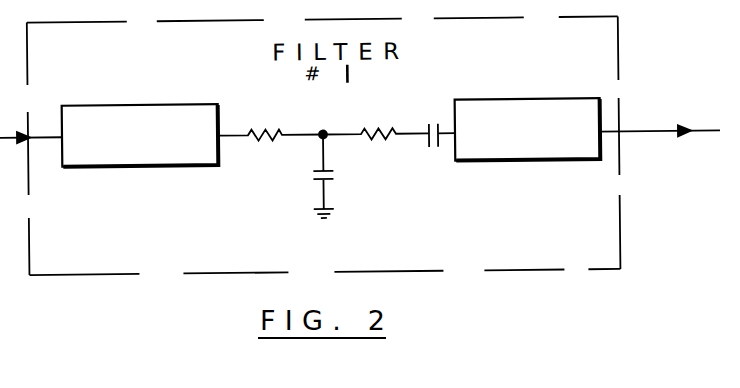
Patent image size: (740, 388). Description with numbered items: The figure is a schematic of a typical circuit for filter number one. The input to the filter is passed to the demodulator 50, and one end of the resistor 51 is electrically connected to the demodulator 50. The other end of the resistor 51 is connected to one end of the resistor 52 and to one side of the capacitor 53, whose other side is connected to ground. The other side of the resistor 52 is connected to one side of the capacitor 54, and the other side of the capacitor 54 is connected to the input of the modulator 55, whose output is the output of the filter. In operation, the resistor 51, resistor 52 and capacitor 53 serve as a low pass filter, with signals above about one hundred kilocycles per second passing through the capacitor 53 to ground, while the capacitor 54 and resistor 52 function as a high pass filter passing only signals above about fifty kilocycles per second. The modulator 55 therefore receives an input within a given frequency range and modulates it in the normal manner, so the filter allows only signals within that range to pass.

The demodulator 50 is at (120, 164).
The resistor 51 is at (255, 124).
The resistor 52 is at (383, 126).
The capacitor 53 is at (332, 175).
The capacitor 54 is at (433, 151).
The modulator 55 is at (530, 163).